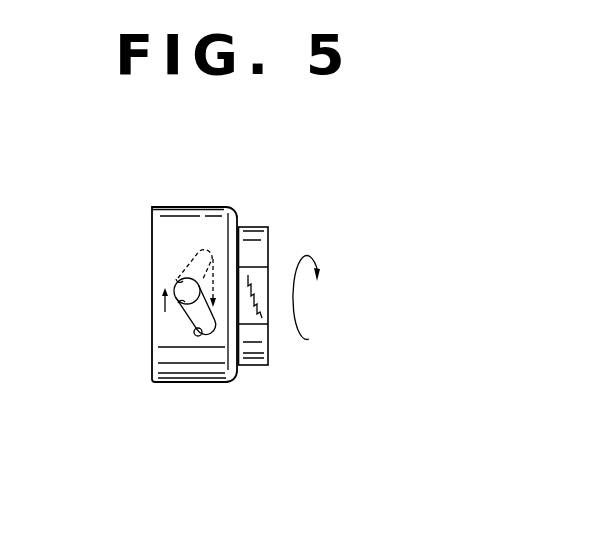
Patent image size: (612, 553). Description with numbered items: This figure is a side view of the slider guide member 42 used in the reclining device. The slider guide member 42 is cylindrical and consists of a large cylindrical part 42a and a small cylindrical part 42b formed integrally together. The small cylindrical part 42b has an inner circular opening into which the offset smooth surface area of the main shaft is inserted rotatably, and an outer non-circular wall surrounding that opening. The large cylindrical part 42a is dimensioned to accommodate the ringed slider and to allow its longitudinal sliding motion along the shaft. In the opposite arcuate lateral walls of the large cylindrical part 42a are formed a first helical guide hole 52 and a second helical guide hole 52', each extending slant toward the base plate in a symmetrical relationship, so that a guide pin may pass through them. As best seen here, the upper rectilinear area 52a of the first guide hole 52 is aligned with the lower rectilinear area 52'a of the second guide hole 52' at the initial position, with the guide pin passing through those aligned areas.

The slider guide member 42 is at (169, 201).
The large cylindrical part 42a is at (197, 206).
The small cylindrical part 42b is at (257, 227).
The first helical guide hole 52 is at (194, 362).
The second helical guide hole 52' is at (226, 230).
The upper rectilinear area 52a is at (177, 282).
The lower rectilinear area 52'a is at (131, 334).